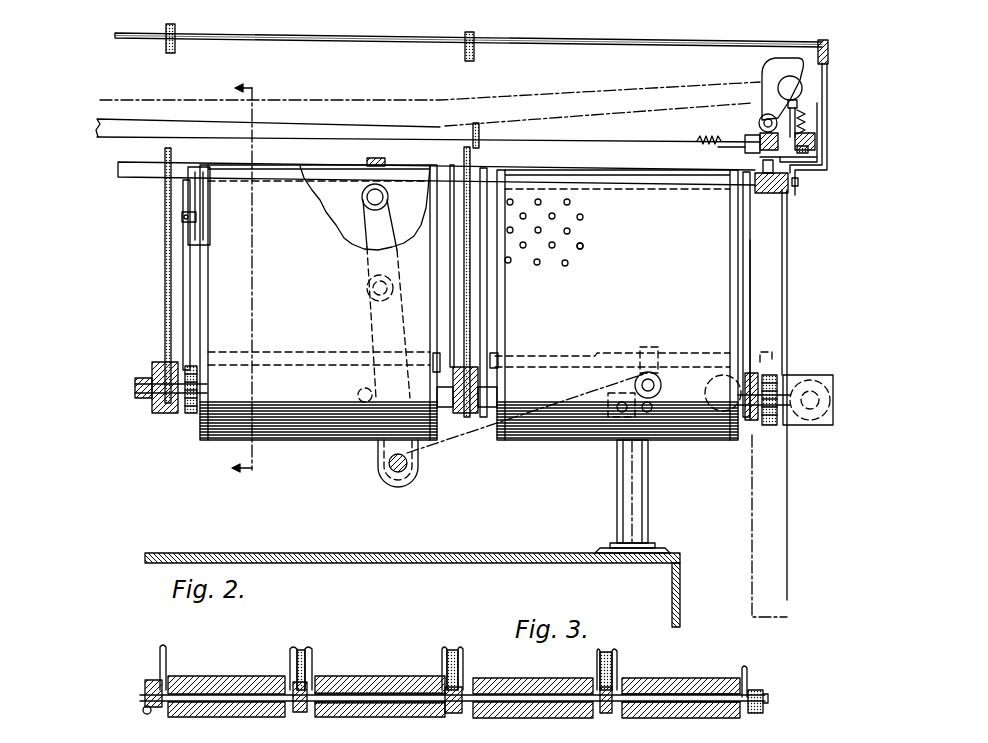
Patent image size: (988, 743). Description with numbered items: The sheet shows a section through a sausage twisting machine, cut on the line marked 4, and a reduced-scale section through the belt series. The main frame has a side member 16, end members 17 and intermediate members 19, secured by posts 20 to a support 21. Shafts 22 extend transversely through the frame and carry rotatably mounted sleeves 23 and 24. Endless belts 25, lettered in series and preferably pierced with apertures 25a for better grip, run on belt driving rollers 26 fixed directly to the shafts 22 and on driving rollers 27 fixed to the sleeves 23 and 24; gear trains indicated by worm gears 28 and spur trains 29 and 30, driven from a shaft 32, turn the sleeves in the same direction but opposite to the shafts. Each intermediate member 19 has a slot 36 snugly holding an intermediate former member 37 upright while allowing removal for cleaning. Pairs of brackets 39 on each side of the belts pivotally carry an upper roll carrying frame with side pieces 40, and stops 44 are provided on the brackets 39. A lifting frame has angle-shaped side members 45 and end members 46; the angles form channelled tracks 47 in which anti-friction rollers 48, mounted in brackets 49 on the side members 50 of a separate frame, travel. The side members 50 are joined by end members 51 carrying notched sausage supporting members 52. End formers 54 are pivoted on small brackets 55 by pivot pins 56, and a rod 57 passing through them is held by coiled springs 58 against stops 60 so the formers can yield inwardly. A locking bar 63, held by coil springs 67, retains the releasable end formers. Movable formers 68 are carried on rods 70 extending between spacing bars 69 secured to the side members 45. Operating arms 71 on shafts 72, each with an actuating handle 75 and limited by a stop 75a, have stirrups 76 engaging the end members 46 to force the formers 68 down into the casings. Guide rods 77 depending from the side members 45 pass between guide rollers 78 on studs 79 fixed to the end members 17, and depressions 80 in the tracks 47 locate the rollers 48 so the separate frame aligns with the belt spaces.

In FIG. 2, the section line 4- 4 is at (240, 282).
In FIG. 2, the side member 16 is at (748, 420).
In FIG. 2, the end member 17 is at (145, 405).
In FIG. 2, the intermediate member 19 is at (165, 414).
In FIG. 3, the intermediate member 19 is at (300, 713).
In FIG. 2, the post 20 is at (648, 509).
In FIG. 2, the support 21 is at (680, 598).
In FIG. 3, the shaft 22 is at (240, 690).
In FIG. 3, the sleeve 23 is at (385, 690).
In FIG. 3, the sleeve 24 is at (700, 692).
In FIG. 2, the endless belt 25 is at (469, 302).
In FIG. 2, the aperture 25a is at (584, 258).
In FIG. 2, the belt driving roller 26 is at (207, 431).
In FIG. 3, the belt driving roller 26 is at (230, 712).
In FIG. 3, the driving roller 27 is at (370, 713).
In FIG. 3, the worm gear 28 is at (145, 708).
In FIG. 2, the gear train 29 is at (190, 366).
In FIG. 3, the gear train 29 is at (458, 713).
In FIG. 2, the gear train 30 is at (770, 380).
In FIG. 3, the gear train 30 is at (765, 708).
In FIG. 3, the shaft 32 is at (147, 715).
In FIG. 2, the slot 36 is at (470, 415).
In FIG. 2, the intermediate former member 37 is at (165, 266).
In FIG. 3, the intermediate former member 37 is at (306, 660).
In FIG. 2, the bracket 39 is at (190, 294).
In FIG. 3, the bracket 39 is at (165, 665).
In FIG. 2, the side piece 40 is at (190, 191).
In FIG. 2, the stop 44 is at (183, 221).
In FIG. 2, the side member 45 is at (776, 193).
In FIG. 2, the end member 46 is at (122, 168).
In FIG. 2, the channelled track 47 is at (800, 181).
In FIG. 2, the anti-friction roller 48 is at (762, 160).
In FIG. 2, the bracket 49 is at (818, 159).
In FIG. 2, the side member 50 is at (761, 136).
In FIG. 2, the end member 51 is at (540, 140).
In FIG. 2, the sausage supporting member 52 is at (477, 123).
In FIG. 2, the end former 54 is at (782, 70).
In FIG. 2, the bracket 55 is at (767, 117).
In FIG. 2, the pivot pin 56 is at (803, 90).
In FIG. 2, the rod 57 is at (798, 104).
In FIG. 2, the coiled spring 58 is at (816, 140).
In FIG. 2, the stop 60 is at (808, 122).
In FIG. 2, the locking bar 63 is at (809, 150).
In FIG. 2, the coil spring 67 is at (700, 139).
In FIG. 2, the movable former 68 is at (176, 44).
In FIG. 2, the spacing bar 69 is at (830, 58).
In FIG. 2, the rod 70 is at (625, 43).
In FIG. 2, the operating arm 71 is at (372, 222).
In FIG. 2, the shaft 72 is at (388, 470).
In FIG. 2, the actuating handle 75 is at (372, 290).
In FIG. 2, the stop 75a is at (360, 392).
In FIG. 2, the stirrup 76 is at (386, 162).
In FIG. 2, the guide rod 77 is at (787, 312).
In FIG. 2, the guide roller 78 is at (715, 378).
In FIG. 2, the stud 79 is at (830, 401).
In FIG. 2, the depression 80 is at (768, 350).